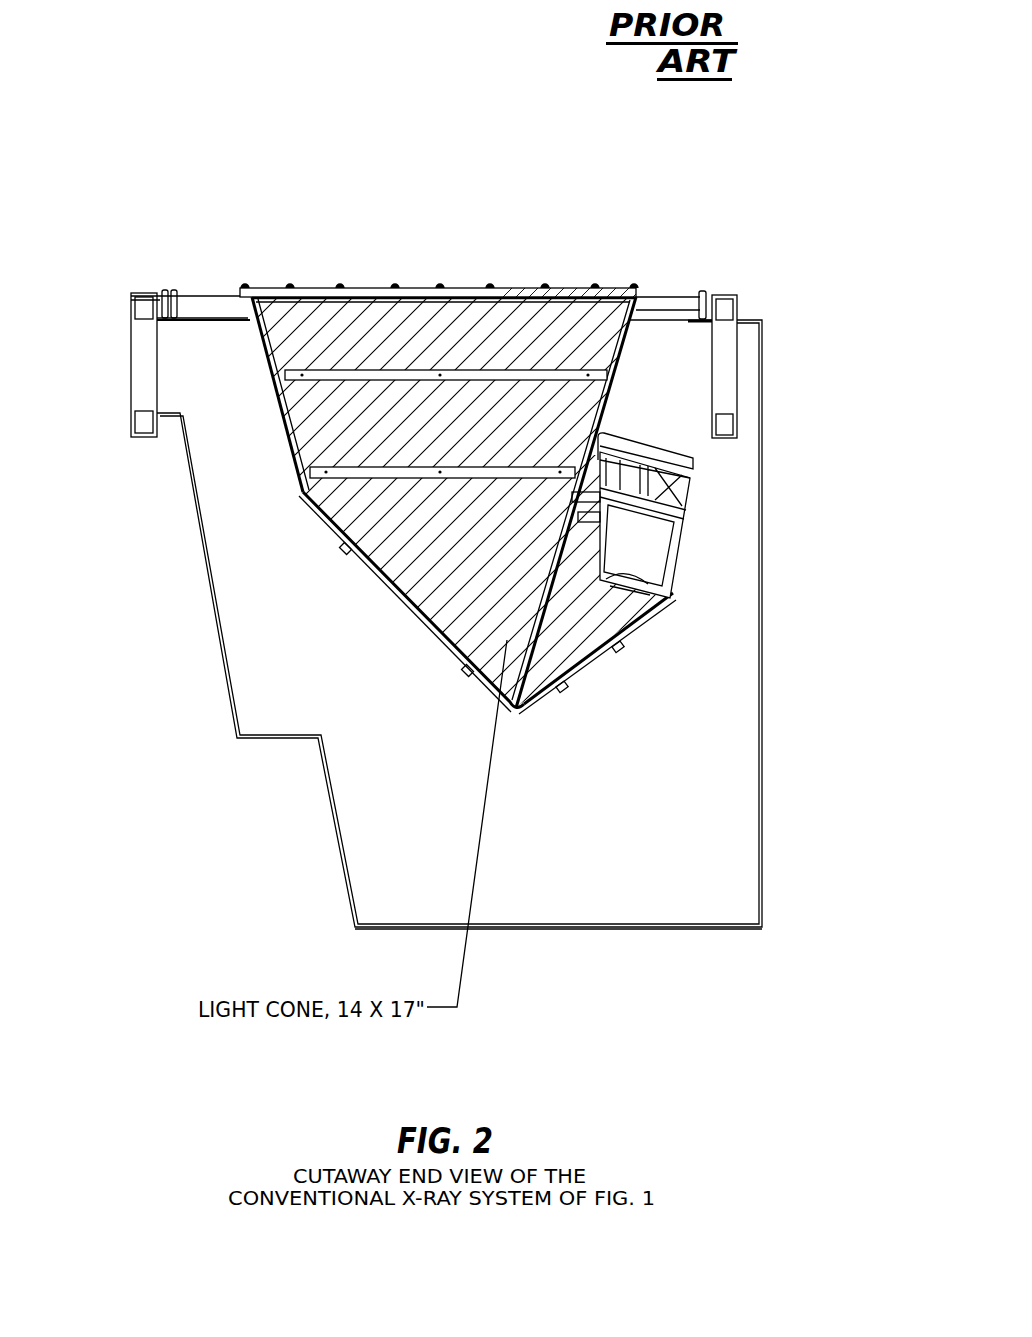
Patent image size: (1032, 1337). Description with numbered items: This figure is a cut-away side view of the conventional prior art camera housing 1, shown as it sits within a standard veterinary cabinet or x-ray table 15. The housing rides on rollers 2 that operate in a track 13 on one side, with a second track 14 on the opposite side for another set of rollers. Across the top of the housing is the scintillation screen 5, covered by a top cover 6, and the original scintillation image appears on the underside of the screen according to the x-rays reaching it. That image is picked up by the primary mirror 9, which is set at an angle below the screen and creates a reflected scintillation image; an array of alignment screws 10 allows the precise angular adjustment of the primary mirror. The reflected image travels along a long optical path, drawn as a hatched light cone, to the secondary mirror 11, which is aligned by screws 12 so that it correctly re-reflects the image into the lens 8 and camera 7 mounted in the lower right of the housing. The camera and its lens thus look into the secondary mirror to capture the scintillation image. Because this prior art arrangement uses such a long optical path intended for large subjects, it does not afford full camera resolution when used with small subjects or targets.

The camera housing 1 is at (301, 494).
The rollers 2 is at (682, 300).
The scintillation screen 5 is at (433, 289).
The top cover 6 is at (518, 290).
The camera 7 is at (693, 475).
The lens 8 is at (808, 657).
The primary mirror 9 is at (332, 540).
The alignment screws 10 is at (463, 685).
The secondary mirror 11 is at (630, 620).
The screws 12 is at (612, 652).
The track 13 is at (701, 323).
The track 14 is at (175, 323).
The x-ray table 15 is at (582, 932).